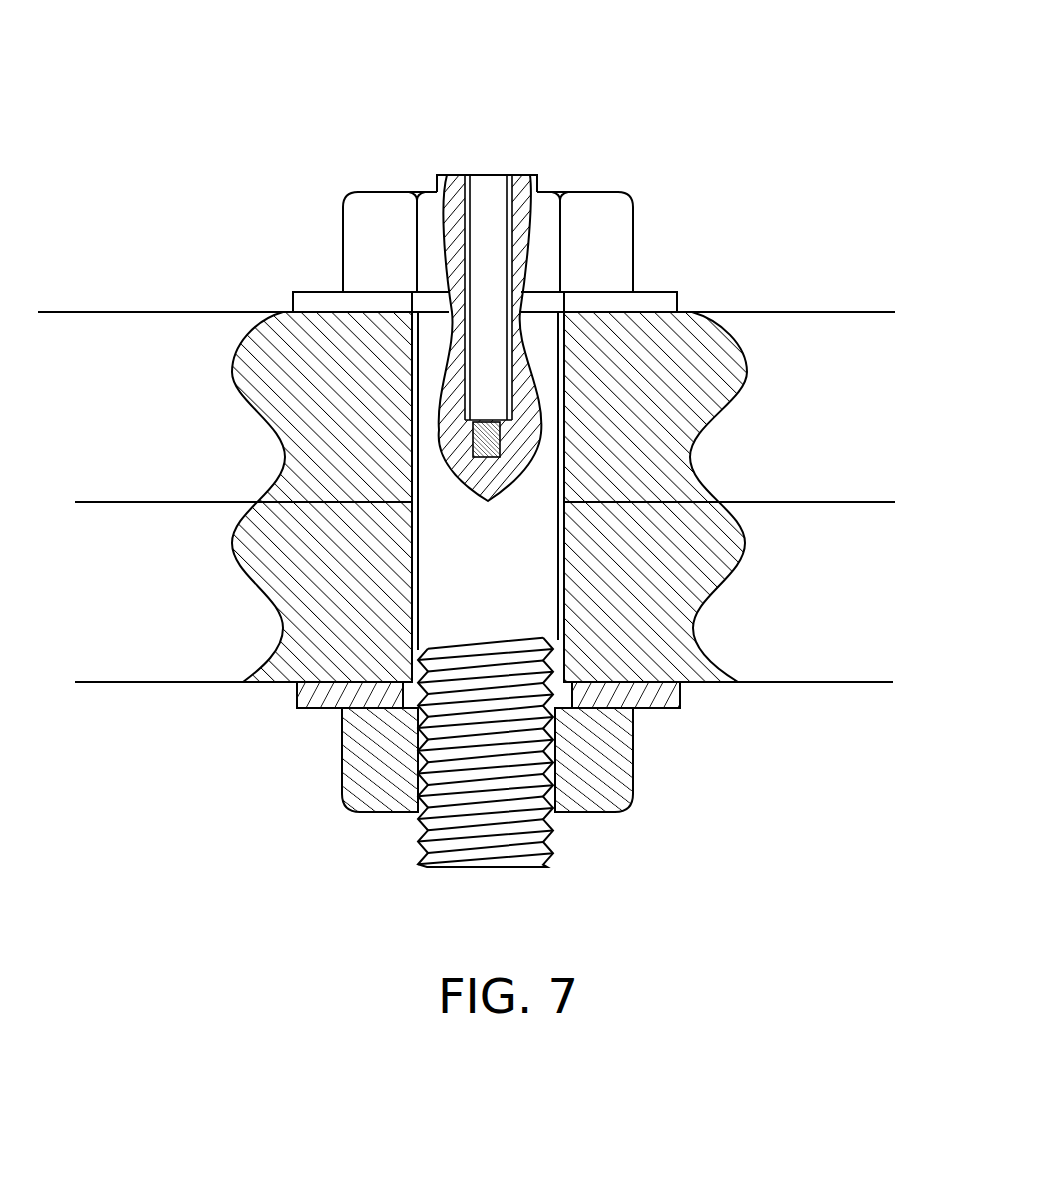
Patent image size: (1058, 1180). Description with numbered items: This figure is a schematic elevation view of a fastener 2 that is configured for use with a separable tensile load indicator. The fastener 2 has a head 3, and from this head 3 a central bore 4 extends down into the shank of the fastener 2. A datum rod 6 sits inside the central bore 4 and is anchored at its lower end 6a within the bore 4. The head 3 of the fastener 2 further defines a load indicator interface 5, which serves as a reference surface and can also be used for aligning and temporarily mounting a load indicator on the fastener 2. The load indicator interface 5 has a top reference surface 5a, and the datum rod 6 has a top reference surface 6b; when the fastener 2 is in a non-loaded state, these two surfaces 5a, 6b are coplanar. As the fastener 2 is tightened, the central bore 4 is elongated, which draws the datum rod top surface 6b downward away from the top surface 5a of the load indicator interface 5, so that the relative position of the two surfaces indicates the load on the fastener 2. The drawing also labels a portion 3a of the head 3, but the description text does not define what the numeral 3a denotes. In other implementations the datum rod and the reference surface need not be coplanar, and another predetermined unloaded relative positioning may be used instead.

The fastener 2 is at (289, 226).
The head 3 is at (620, 248).
The nut top surface 3a is at (374, 192).
The central bore 4 is at (470, 360).
The load indicator interface 5 is at (537, 181).
The top reference surface 5a is at (449, 173).
The datum rod 6 is at (499, 177).
The lower end 6a is at (481, 457).
The top reference surface 6b is at (493, 200).